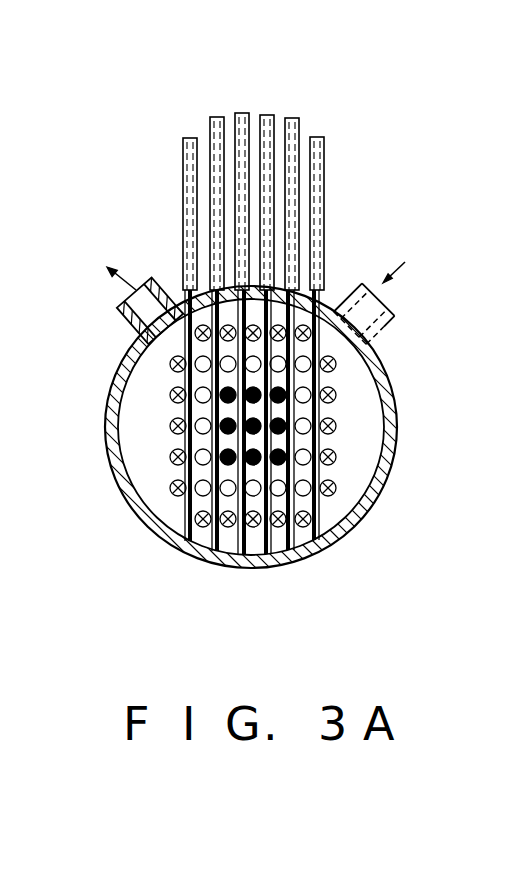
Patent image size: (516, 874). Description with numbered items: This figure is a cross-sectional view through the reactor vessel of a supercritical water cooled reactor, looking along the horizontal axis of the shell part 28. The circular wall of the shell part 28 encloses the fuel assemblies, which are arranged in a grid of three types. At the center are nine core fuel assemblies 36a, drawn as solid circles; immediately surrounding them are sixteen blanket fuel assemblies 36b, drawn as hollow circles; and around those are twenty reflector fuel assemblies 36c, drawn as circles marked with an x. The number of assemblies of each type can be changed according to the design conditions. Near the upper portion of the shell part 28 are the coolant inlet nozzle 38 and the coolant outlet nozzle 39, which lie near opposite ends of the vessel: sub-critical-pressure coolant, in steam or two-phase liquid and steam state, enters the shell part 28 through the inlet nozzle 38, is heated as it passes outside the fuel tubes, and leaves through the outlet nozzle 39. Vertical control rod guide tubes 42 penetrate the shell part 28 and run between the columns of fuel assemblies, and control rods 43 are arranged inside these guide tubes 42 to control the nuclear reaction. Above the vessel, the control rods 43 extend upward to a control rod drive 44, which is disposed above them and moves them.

The shell part 28 is at (388, 386).
The core fuel assemblies 36a is at (197, 432).
The blanket fuel assemblies 36b is at (198, 405).
The reflector fuel assemblies 36c is at (336, 432).
The coolant inlet nozzle 38 is at (366, 312).
The coolant outlet nozzle 39 is at (147, 306).
The control rod guide tubes 42 is at (188, 511).
The control rods 43 is at (322, 513).
The control rod drive 44 is at (190, 138).